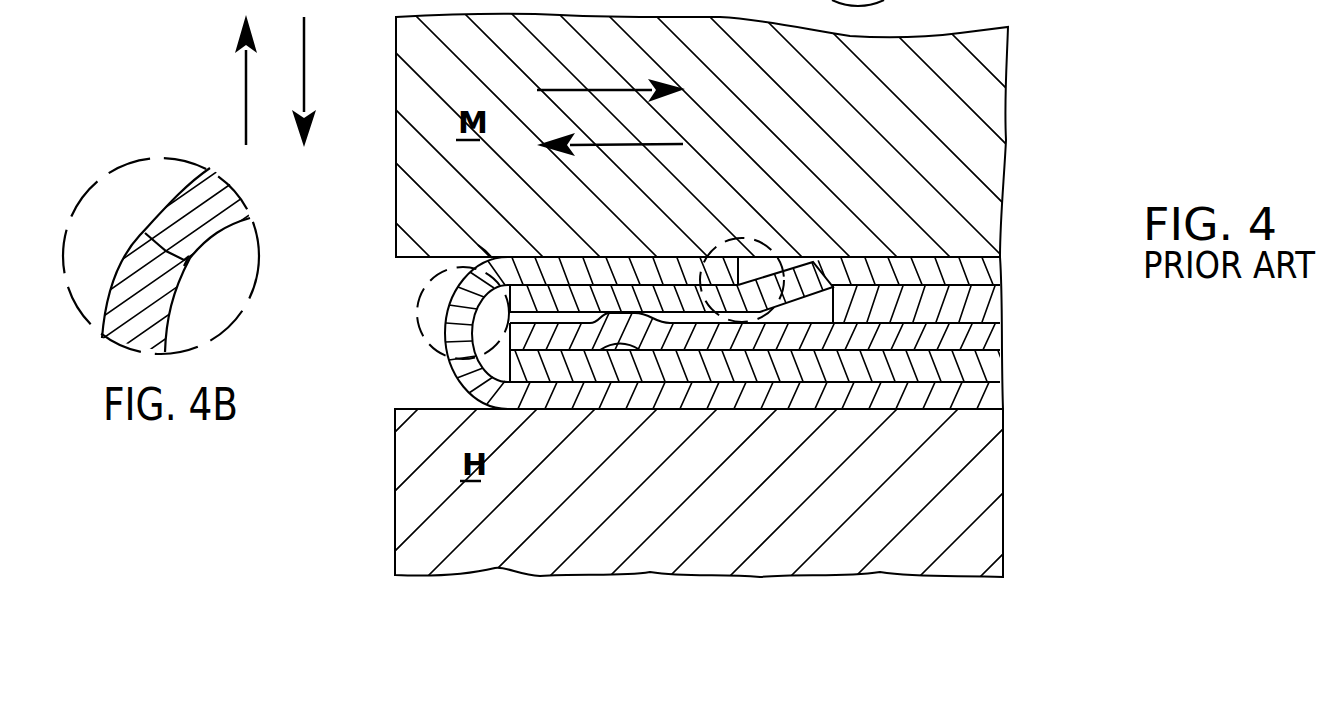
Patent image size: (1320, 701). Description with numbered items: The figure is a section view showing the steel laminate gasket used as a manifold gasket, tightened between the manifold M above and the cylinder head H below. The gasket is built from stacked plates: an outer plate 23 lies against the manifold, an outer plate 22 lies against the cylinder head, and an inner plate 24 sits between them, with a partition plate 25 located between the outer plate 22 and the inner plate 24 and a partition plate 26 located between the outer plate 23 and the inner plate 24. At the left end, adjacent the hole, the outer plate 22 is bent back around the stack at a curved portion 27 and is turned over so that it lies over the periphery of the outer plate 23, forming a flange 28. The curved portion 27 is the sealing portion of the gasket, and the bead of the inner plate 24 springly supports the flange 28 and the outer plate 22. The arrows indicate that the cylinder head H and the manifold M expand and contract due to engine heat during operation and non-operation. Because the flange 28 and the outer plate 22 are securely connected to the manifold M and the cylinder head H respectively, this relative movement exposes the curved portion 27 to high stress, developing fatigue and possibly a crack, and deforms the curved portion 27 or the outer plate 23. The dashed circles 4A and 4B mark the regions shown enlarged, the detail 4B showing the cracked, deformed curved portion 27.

The outer plate 22 is at (994, 402).
The outer plate 23 is at (994, 258).
The inner plate 24 is at (977, 347).
The partition plate 25 is at (979, 398).
The partition plate 26 is at (984, 300).
The curved portion 27 is at (453, 372).
The flange 28 is at (491, 258).
The detail region 4A is at (766, 311).
The detail region 4B is at (421, 304).